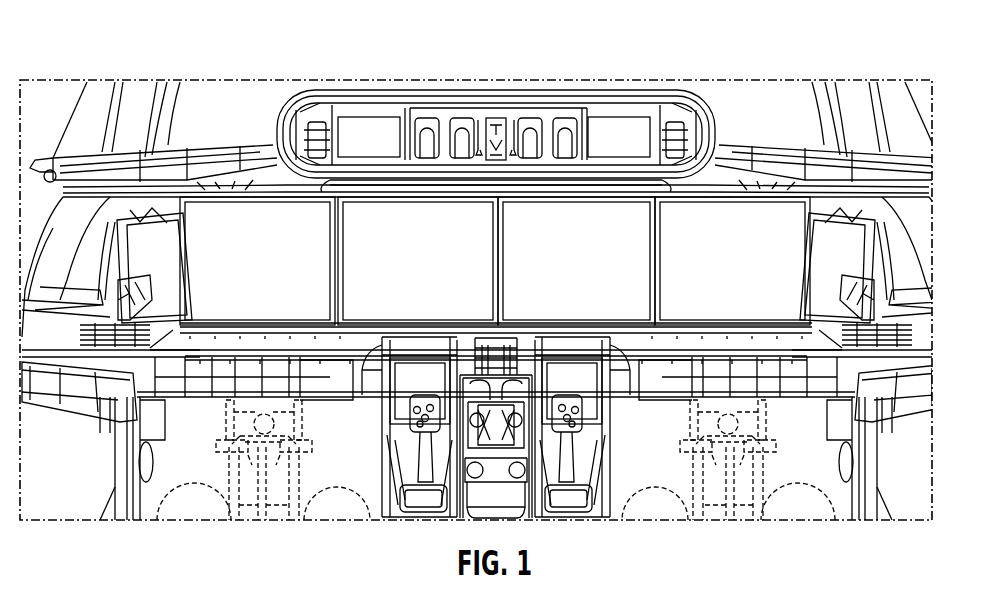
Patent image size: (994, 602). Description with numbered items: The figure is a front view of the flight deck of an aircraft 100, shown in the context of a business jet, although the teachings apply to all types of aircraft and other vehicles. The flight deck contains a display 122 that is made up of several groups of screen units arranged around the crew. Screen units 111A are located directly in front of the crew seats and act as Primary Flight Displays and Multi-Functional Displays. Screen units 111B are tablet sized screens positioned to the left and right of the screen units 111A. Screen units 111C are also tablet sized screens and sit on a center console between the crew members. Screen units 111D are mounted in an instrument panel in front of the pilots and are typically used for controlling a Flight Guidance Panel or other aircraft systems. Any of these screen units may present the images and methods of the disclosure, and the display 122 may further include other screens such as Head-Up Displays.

The aircraft 100 is at (146, 42).
The screen units 111A is at (287, 272).
The screen units 111B is at (177, 272).
The screen units 111C is at (403, 378).
The screen units 111D is at (372, 135).
The display 122 is at (606, 260).